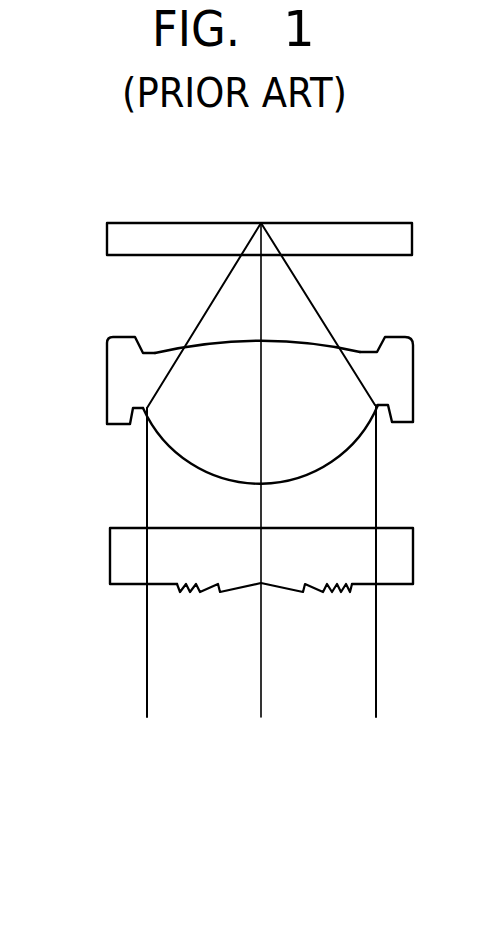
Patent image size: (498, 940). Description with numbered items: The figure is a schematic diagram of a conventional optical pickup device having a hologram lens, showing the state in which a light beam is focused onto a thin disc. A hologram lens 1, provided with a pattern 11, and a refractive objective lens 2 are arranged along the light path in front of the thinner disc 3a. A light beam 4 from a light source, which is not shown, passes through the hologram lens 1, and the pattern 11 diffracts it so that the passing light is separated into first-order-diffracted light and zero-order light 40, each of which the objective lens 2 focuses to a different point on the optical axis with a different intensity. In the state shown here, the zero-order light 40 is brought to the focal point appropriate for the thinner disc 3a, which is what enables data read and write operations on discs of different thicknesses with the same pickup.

The disc 3a is at (115, 239).
The refractive objective lens 2 is at (115, 394).
The zero-order light 40 is at (147, 501).
The hologram lens 1 is at (237, 598).
The pattern 11 is at (350, 612).
The light beam 4 is at (378, 740).